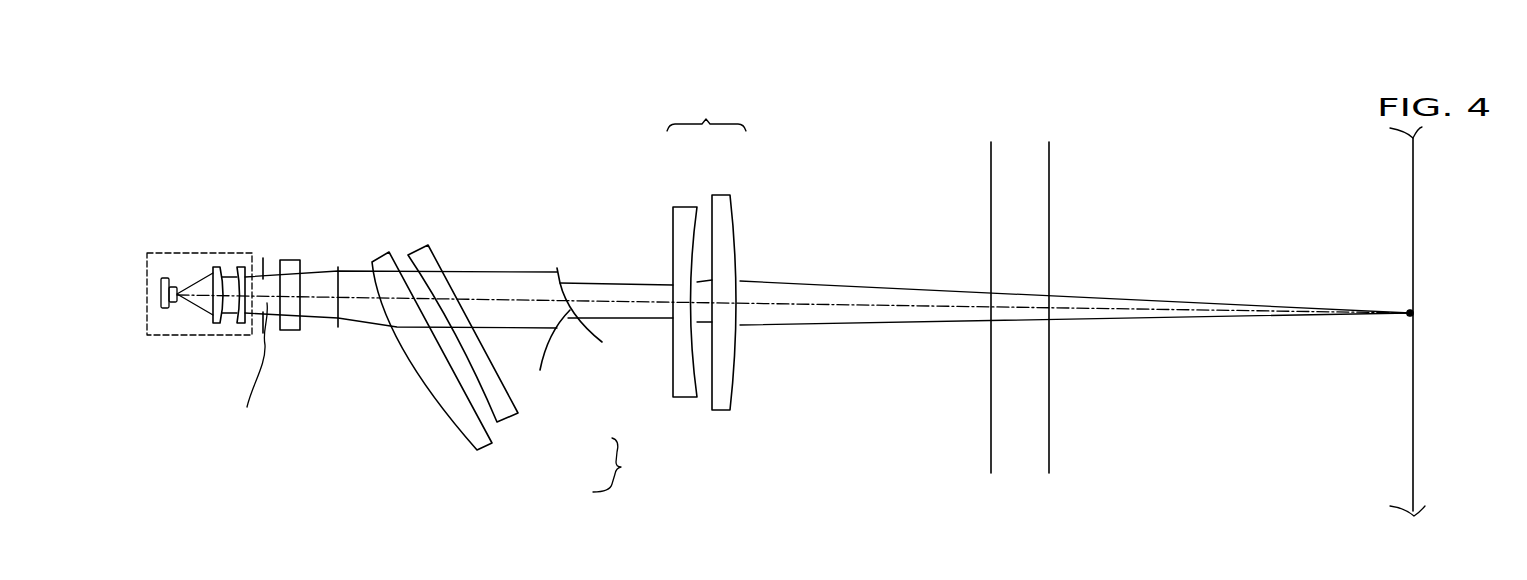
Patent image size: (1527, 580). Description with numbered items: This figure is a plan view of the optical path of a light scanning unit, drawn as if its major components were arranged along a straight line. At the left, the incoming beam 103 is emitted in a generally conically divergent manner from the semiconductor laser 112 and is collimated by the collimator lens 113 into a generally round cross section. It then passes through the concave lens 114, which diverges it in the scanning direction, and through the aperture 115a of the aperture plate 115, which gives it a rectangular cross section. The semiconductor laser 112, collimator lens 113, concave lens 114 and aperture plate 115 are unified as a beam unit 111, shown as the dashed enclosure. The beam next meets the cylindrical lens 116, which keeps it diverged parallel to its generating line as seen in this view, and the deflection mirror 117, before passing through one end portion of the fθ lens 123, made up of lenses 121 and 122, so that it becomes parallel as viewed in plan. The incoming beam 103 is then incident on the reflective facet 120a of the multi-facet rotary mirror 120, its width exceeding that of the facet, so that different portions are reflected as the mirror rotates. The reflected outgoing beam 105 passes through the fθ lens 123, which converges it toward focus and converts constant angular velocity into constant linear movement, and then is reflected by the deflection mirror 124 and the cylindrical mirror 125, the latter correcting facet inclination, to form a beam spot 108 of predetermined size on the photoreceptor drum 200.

The incoming beam 103 is at (493, 278).
The outgoing beam 105 is at (630, 321).
The beam spot 108 is at (1416, 308).
The beam unit 111 is at (172, 252).
The semiconductor laser 112 is at (162, 309).
The collimator lens 113 is at (217, 267).
The concave lens 114 is at (240, 324).
The aperture plate 115 is at (263, 258).
The aperture 115a is at (251, 368).
The cylindrical lens 116 is at (293, 331).
The deflection mirror 117 is at (338, 267).
The multi-facet rotary mirror 120 is at (557, 268).
The reflective facet 120a is at (555, 355).
The lens 121 is at (687, 207).
The lens 122 is at (725, 195).
The fθ lens 123 is at (669, 291).
The deflection mirror 124 is at (991, 183).
The cylindrical mirror 125 is at (1049, 192).
The photoreceptor drum 200 is at (1411, 177).